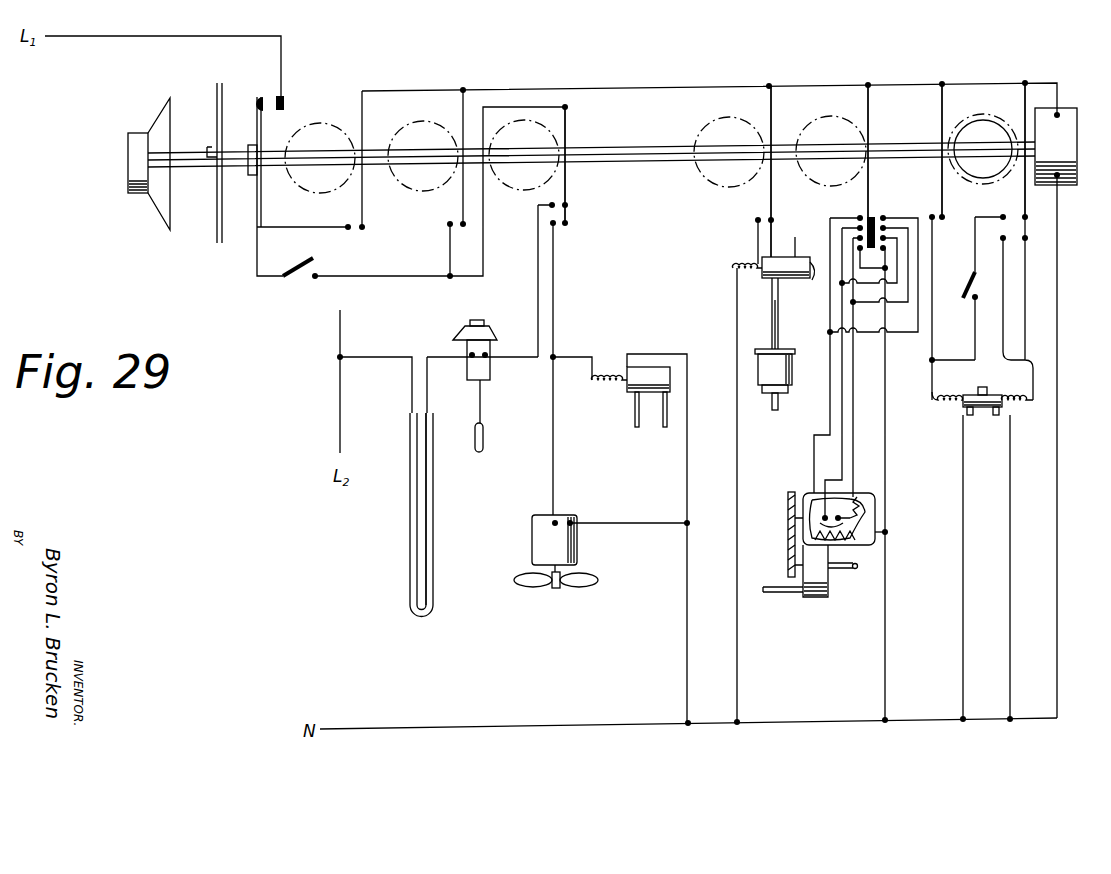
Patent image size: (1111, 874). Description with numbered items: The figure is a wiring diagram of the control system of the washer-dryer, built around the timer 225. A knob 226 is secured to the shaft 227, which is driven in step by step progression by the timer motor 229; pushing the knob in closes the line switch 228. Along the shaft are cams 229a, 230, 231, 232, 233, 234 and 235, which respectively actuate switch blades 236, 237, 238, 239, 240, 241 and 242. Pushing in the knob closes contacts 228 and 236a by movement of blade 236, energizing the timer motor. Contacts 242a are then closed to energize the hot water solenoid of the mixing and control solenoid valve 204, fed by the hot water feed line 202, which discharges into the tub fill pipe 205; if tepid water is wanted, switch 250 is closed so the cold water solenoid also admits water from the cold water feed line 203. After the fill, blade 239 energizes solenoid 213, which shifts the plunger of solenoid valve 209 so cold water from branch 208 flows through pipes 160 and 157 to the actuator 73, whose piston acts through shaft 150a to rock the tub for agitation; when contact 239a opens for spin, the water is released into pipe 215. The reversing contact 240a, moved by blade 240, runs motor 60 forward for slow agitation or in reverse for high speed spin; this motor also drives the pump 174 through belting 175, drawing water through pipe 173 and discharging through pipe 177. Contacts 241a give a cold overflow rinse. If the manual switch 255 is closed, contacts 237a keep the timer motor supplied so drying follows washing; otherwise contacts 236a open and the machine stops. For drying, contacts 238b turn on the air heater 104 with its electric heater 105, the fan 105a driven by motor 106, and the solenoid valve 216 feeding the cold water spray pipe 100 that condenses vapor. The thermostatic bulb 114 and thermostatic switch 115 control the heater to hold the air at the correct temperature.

The timer 225 is at (686, 62).
The knob 226 is at (162, 148).
The shaft 227 is at (641, 146).
The line switch 228 is at (264, 96).
The timer motor 229 is at (1066, 112).
The cam 229a is at (346, 122).
The cam 230 is at (448, 120).
The cam 231 is at (556, 128).
The cam 232 is at (755, 123).
The cam 233 is at (856, 125).
The cam 234 is at (962, 128).
The cam 235 is at (995, 130).
The switch blade 236 is at (360, 148).
The contacts 236a is at (356, 236).
The switch blade 237 is at (466, 116).
The contacts 237a is at (450, 220).
The switch blade 238 is at (566, 143).
The contacts 238b is at (551, 207).
The switch blade 239 is at (770, 130).
The contact 239a is at (756, 219).
The switch blade 240 is at (868, 125).
The contact 240a is at (873, 218).
The switch blade 241 is at (938, 115).
The contacts 241a is at (944, 220).
The switch blade 242 is at (1025, 102).
The contacts 242a is at (1018, 232).
The switch 250 is at (960, 296).
The manual switch 255 is at (310, 262).
The solenoid 213 is at (744, 272).
The pipe 215 is at (796, 248).
The branch 208 is at (774, 235).
The solenoid valve 209 is at (795, 313).
The pipe 160 is at (777, 303).
The pipe 157 is at (778, 340).
The actuator 73 is at (820, 377).
The shaft 150a is at (779, 398).
The tub fill pipe 205 is at (986, 390).
The mixing and control solenoid valve 204 is at (990, 400).
The cold water feed line 203 is at (968, 420).
The hot water feed line 202 is at (997, 420).
The thermostatic switch 115 is at (464, 337).
The thermostatic bulb 114 is at (481, 440).
The air heater 104 is at (470, 494).
The electric heater 105 is at (433, 528).
The motor 106 is at (541, 540).
The fan 105a is at (582, 585).
The solenoid valve 216 is at (648, 372).
The cold water spray pipe 100 is at (660, 425).
The motor 60 is at (862, 492).
The belting 175 is at (787, 557).
The pump 174 is at (823, 556).
The pipe 173 is at (832, 573).
The pipe 177 is at (777, 593).